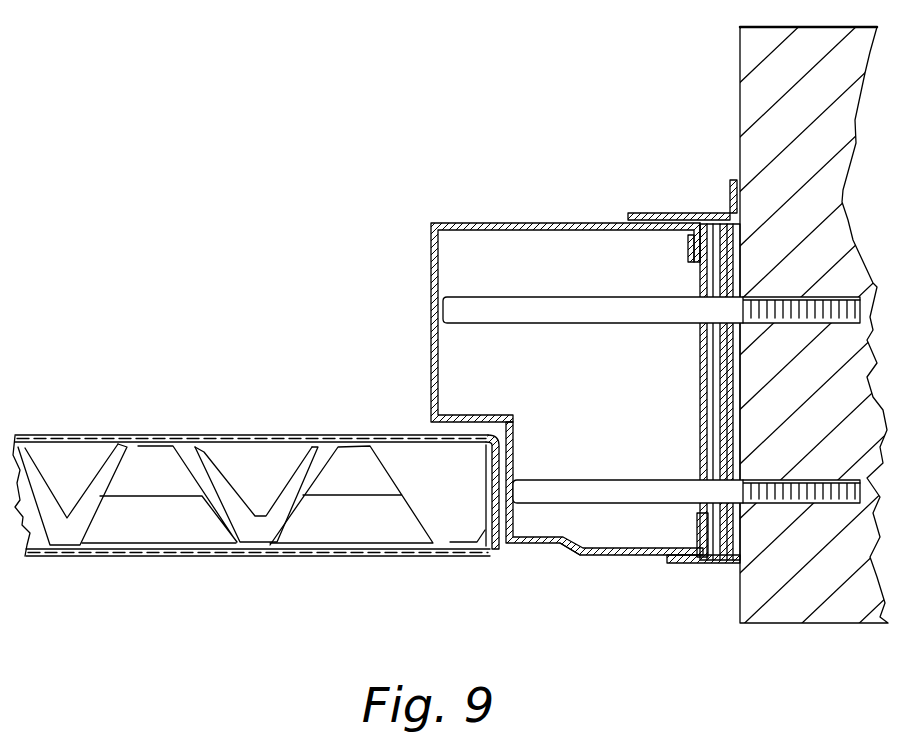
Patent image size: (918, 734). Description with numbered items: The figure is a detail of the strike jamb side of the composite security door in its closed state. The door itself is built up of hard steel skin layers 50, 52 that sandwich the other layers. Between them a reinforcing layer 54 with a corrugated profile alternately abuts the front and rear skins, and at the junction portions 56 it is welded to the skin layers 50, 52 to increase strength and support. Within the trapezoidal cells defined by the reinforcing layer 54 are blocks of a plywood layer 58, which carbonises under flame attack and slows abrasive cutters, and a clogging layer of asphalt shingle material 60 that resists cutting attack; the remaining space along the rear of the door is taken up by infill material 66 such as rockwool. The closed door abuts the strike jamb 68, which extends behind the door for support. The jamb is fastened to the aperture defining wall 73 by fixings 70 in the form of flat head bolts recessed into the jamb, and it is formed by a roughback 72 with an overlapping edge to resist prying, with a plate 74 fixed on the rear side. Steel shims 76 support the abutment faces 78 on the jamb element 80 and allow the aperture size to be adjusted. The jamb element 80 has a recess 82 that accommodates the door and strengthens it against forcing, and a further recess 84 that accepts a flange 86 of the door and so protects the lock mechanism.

The front skin layer 50 is at (210, 450).
The rear skin layer 52 is at (200, 558).
The reinforcing layer 54 is at (393, 455).
The junction portions 56 is at (477, 545).
The plywood layer 58 is at (150, 520).
The asphalt shingle material 60 is at (85, 522).
The infill material layer 66 is at (66, 465).
The strike jamb 68 is at (550, 198).
The fixings 70 is at (525, 310).
The roughback 72 is at (717, 562).
The aperture defining wall 73 is at (752, 58).
The plate 74 is at (700, 212).
The steel shims 76 is at (700, 340).
The abutment faces 78 is at (692, 228).
The jamb element 80 is at (431, 235).
The recess 82 is at (503, 450).
The further recess 84 is at (548, 532).
The flange 86 is at (535, 558).